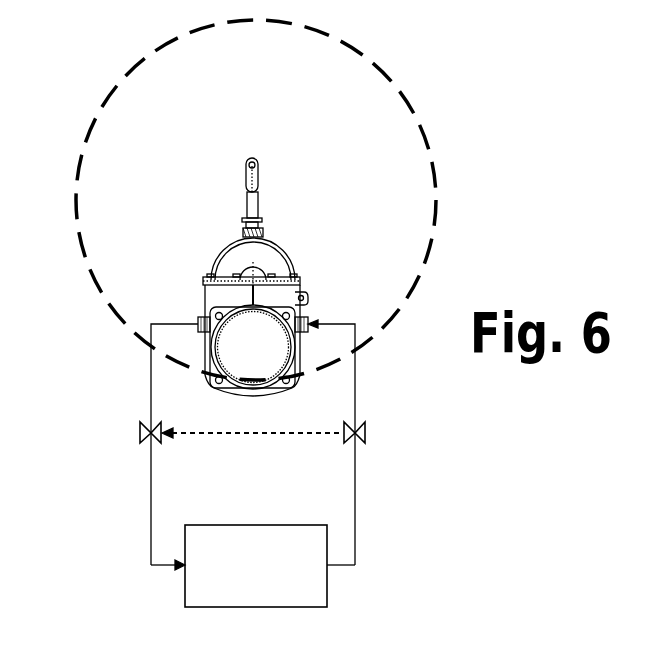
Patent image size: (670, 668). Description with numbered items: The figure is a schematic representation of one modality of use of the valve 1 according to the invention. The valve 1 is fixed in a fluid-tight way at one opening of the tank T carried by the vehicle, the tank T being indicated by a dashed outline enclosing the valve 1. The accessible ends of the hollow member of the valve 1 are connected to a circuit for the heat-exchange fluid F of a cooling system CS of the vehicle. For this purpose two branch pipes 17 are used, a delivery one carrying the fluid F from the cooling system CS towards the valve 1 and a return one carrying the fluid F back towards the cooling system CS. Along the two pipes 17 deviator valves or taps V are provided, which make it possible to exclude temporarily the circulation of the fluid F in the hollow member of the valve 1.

The valve 1 is at (196, 254).
The tank T is at (433, 150).
The deviator valves or taps V is at (142, 428).
The branch pipes 17 is at (150, 478).
The heat-exchange fluid F is at (250, 554).
The cooling system CS is at (256, 566).